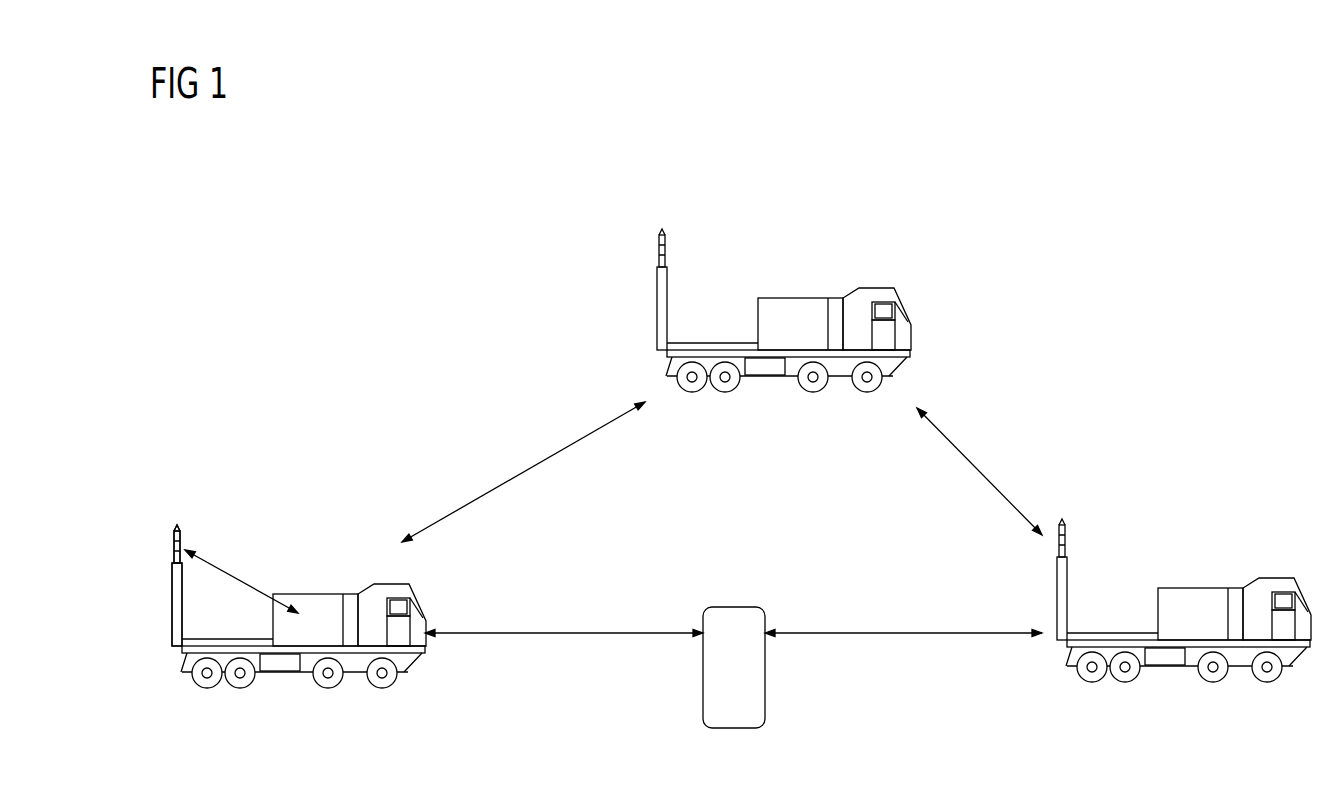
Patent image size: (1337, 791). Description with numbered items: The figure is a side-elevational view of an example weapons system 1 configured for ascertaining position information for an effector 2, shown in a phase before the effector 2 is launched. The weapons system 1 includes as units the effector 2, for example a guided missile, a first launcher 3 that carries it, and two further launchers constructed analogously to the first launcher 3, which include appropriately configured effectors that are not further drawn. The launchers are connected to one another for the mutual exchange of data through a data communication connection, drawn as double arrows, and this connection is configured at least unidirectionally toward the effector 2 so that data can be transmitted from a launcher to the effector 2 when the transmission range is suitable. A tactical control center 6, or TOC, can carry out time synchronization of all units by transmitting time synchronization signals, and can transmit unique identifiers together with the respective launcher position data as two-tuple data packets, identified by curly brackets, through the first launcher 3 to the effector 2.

The weapons system 1 is at (1038, 182).
The effector 2 is at (175, 584).
The first launcher 3 is at (283, 616).
The tactical control center 6 is at (765, 695).